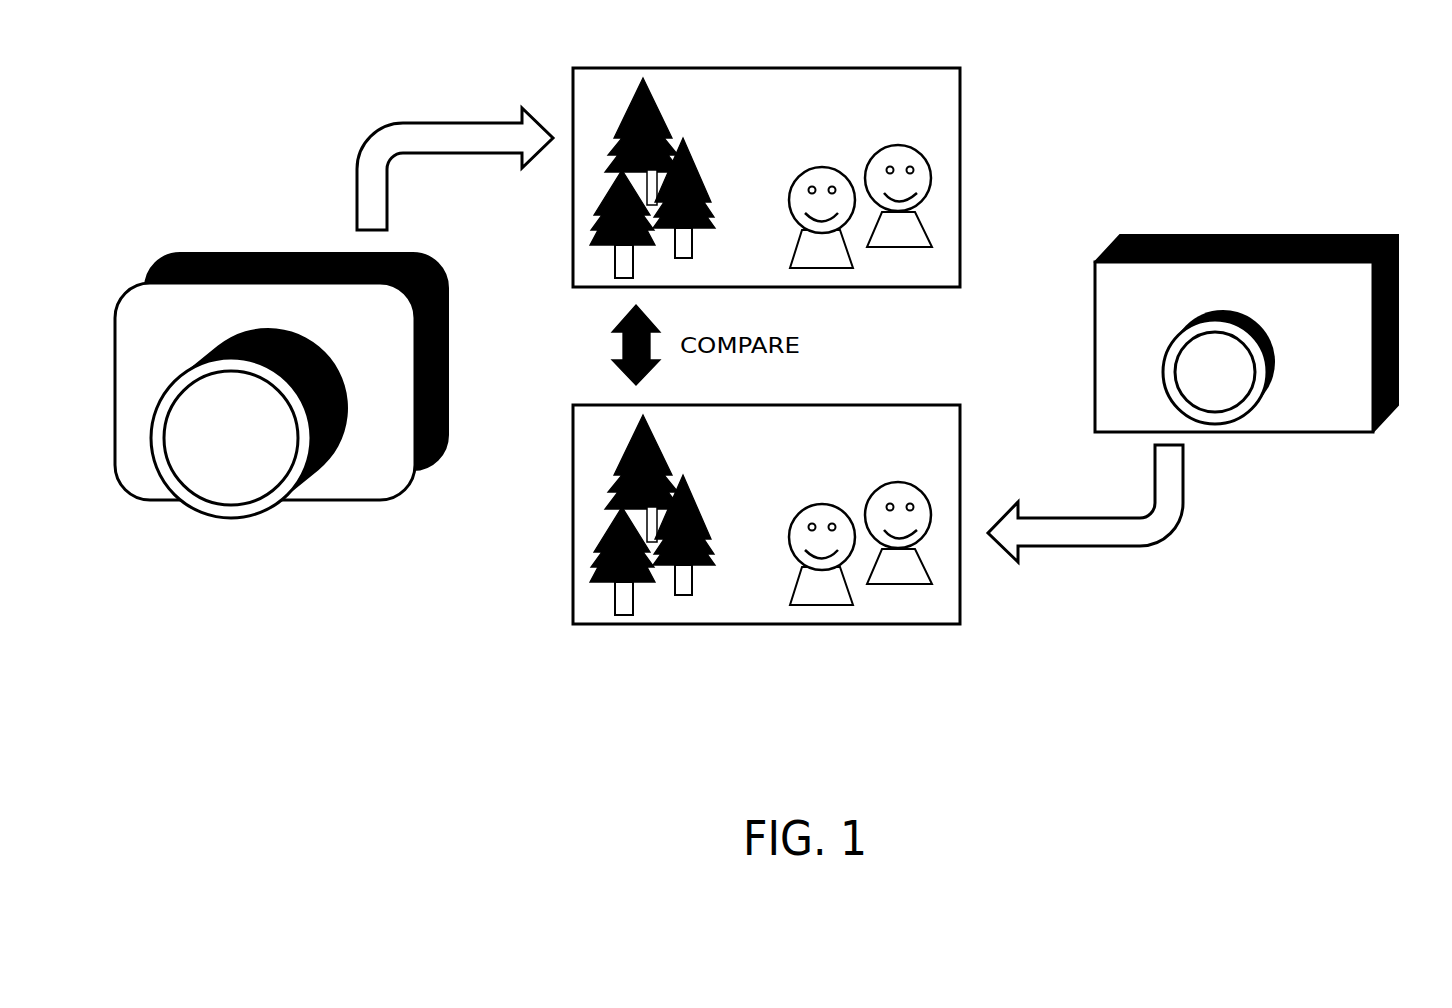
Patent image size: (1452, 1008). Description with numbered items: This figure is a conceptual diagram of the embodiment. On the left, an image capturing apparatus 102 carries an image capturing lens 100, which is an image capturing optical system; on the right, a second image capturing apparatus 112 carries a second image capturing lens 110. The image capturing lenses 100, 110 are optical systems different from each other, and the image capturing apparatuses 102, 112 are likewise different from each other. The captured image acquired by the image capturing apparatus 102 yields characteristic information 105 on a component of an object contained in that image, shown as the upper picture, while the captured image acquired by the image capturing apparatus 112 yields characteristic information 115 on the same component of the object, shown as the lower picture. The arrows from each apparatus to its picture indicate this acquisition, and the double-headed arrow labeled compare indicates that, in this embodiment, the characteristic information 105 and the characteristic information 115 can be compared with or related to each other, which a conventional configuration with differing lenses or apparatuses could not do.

The image capturing lens 100 is at (258, 513).
The image capturing apparatus 102 is at (387, 460).
The characteristic information 105 is at (965, 145).
The image capturing lens 110 is at (1238, 415).
The image capturing apparatus 112 is at (1327, 412).
The characteristic information 115 is at (882, 630).